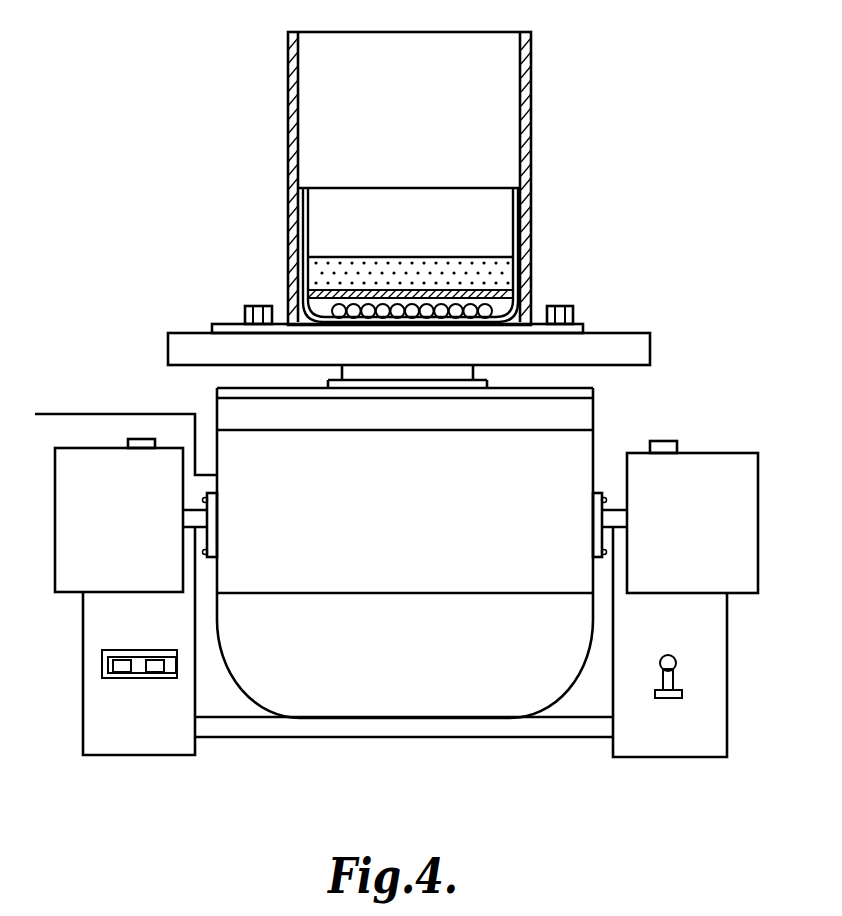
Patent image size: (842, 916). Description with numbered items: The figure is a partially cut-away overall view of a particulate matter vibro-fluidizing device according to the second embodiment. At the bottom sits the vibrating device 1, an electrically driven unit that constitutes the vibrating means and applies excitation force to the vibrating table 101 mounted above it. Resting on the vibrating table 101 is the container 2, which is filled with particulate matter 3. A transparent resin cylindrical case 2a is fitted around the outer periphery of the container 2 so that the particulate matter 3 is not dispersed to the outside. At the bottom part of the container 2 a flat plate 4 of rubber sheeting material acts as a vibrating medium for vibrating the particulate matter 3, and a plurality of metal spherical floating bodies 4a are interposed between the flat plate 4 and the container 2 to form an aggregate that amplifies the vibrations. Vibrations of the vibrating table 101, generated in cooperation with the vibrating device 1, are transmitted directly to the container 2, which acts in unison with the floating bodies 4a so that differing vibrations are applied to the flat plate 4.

The vibrating device 1 is at (416, 521).
The container 2 is at (423, 213).
The transparent resin cylindrical case 2a is at (533, 93).
The particulate matter 3 is at (328, 270).
The flat plate 4 is at (413, 288).
The spherical floating bodies 4a is at (455, 300).
The vibrating table 101 is at (622, 350).